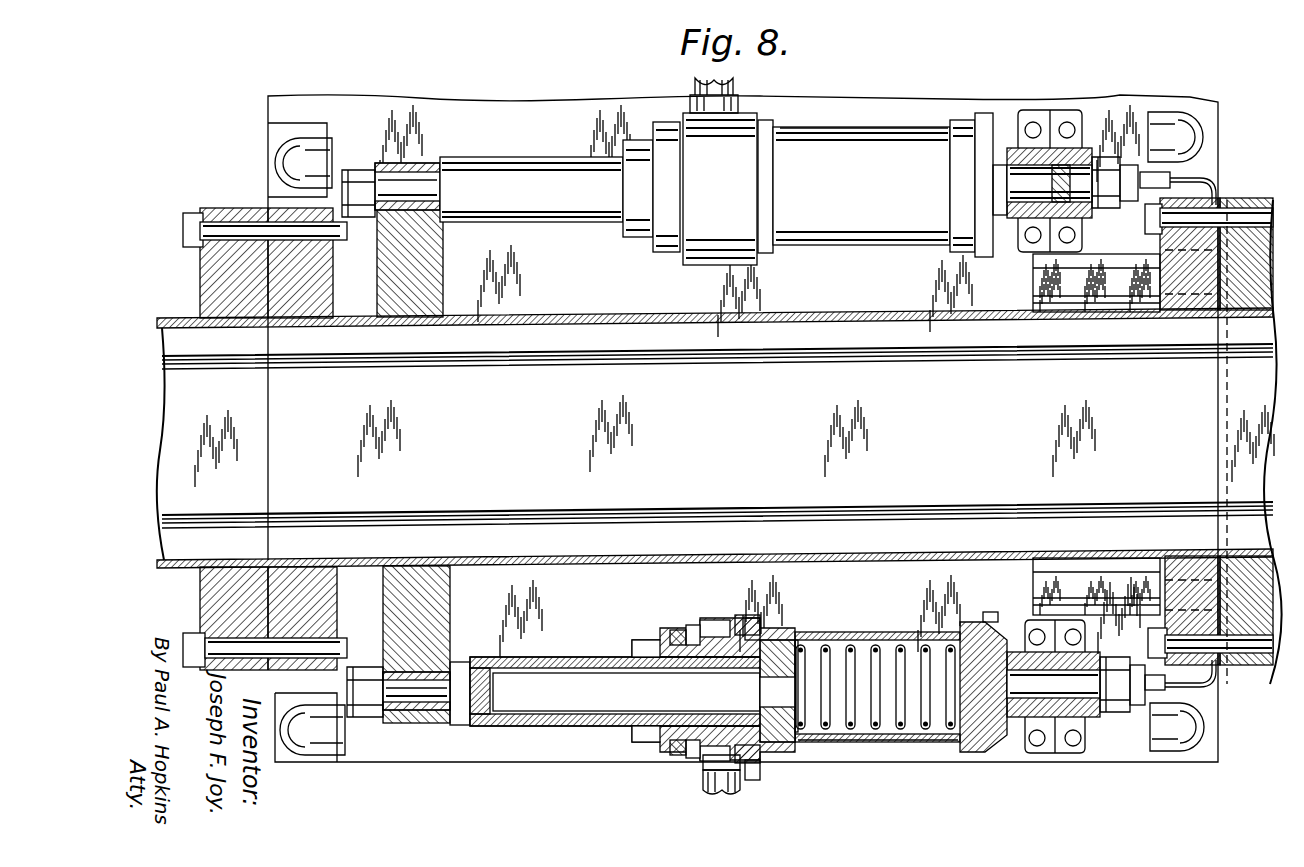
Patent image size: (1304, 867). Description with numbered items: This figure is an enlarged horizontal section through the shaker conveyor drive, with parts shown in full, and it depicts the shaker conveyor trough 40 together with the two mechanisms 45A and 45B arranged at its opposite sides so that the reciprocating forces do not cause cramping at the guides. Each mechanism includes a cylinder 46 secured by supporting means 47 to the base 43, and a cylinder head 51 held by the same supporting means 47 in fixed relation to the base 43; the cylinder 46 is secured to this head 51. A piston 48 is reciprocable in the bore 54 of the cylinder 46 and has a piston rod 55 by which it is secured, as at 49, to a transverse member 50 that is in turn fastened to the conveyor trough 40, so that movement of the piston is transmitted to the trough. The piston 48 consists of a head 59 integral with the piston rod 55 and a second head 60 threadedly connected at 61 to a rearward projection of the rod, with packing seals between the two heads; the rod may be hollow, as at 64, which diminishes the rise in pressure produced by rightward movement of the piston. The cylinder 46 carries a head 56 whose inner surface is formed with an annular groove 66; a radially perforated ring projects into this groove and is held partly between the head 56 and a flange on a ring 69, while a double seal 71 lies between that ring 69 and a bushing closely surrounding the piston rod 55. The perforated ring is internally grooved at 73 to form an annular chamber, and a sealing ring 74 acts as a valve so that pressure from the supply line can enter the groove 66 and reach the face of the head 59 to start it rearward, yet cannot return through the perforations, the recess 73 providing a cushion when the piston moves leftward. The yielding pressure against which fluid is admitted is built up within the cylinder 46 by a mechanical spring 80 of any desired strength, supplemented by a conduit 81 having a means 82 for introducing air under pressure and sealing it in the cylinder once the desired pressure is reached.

The shaker conveyor trough 40 is at (808, 316).
The base 43 is at (910, 108).
The mechanism 45A is at (802, 127).
The mechanism 45B is at (930, 742).
The cylinder 46 is at (838, 128).
The supporting means 47 is at (1040, 150).
The piston 48 is at (750, 622).
The securing connection 49 is at (413, 180).
The transverse member 50 is at (430, 243).
The cylinder head 51 is at (963, 120).
The bore 54 is at (815, 640).
The piston rod 55 is at (525, 162).
The head 56 is at (690, 260).
The integral head 59 is at (650, 745).
The adjustable head 60 is at (785, 742).
The threaded connection 61 is at (770, 640).
The hollow 64 is at (545, 690).
The annular groove 66 is at (718, 624).
The ring 69 is at (693, 628).
The double seal 71 is at (676, 632).
The internal groove 73 is at (742, 762).
The sealing ring 74 is at (700, 758).
The mechanical spring 80 is at (855, 742).
The conduit 81 is at (1062, 180).
The air introduction means 82 is at (1152, 150).